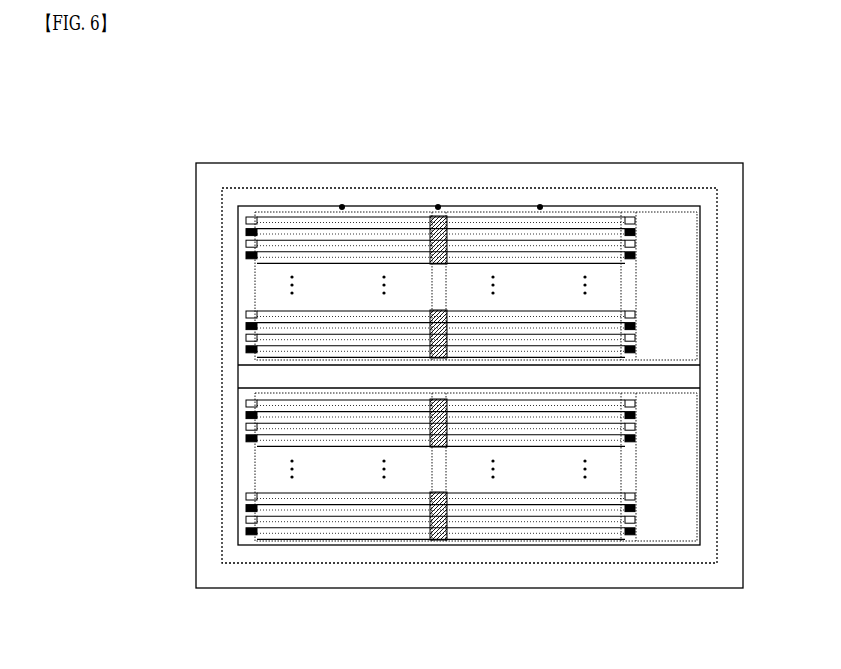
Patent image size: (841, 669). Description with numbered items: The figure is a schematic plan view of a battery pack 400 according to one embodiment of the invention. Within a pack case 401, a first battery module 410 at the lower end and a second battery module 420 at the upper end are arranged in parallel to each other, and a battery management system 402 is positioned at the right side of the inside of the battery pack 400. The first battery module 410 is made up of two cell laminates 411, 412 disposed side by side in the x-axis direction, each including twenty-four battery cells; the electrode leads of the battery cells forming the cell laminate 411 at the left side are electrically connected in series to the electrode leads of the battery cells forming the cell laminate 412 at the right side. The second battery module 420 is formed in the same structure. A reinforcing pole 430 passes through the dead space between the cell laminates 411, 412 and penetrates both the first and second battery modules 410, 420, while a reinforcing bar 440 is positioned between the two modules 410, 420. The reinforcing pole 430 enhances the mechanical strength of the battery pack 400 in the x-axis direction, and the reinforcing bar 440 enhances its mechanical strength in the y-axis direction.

The battery pack 400 is at (148, 102).
The pack case 401 is at (483, 163).
The battery management system (BMS) 402 is at (687, 305).
The first battery module 410 is at (412, 508).
The cell laminate 411 is at (292, 542).
The cell laminate 412 is at (562, 542).
The second battery module 420 is at (245, 287).
The reinforcing pole 430 is at (440, 543).
The reinforcing bar 440 is at (690, 377).